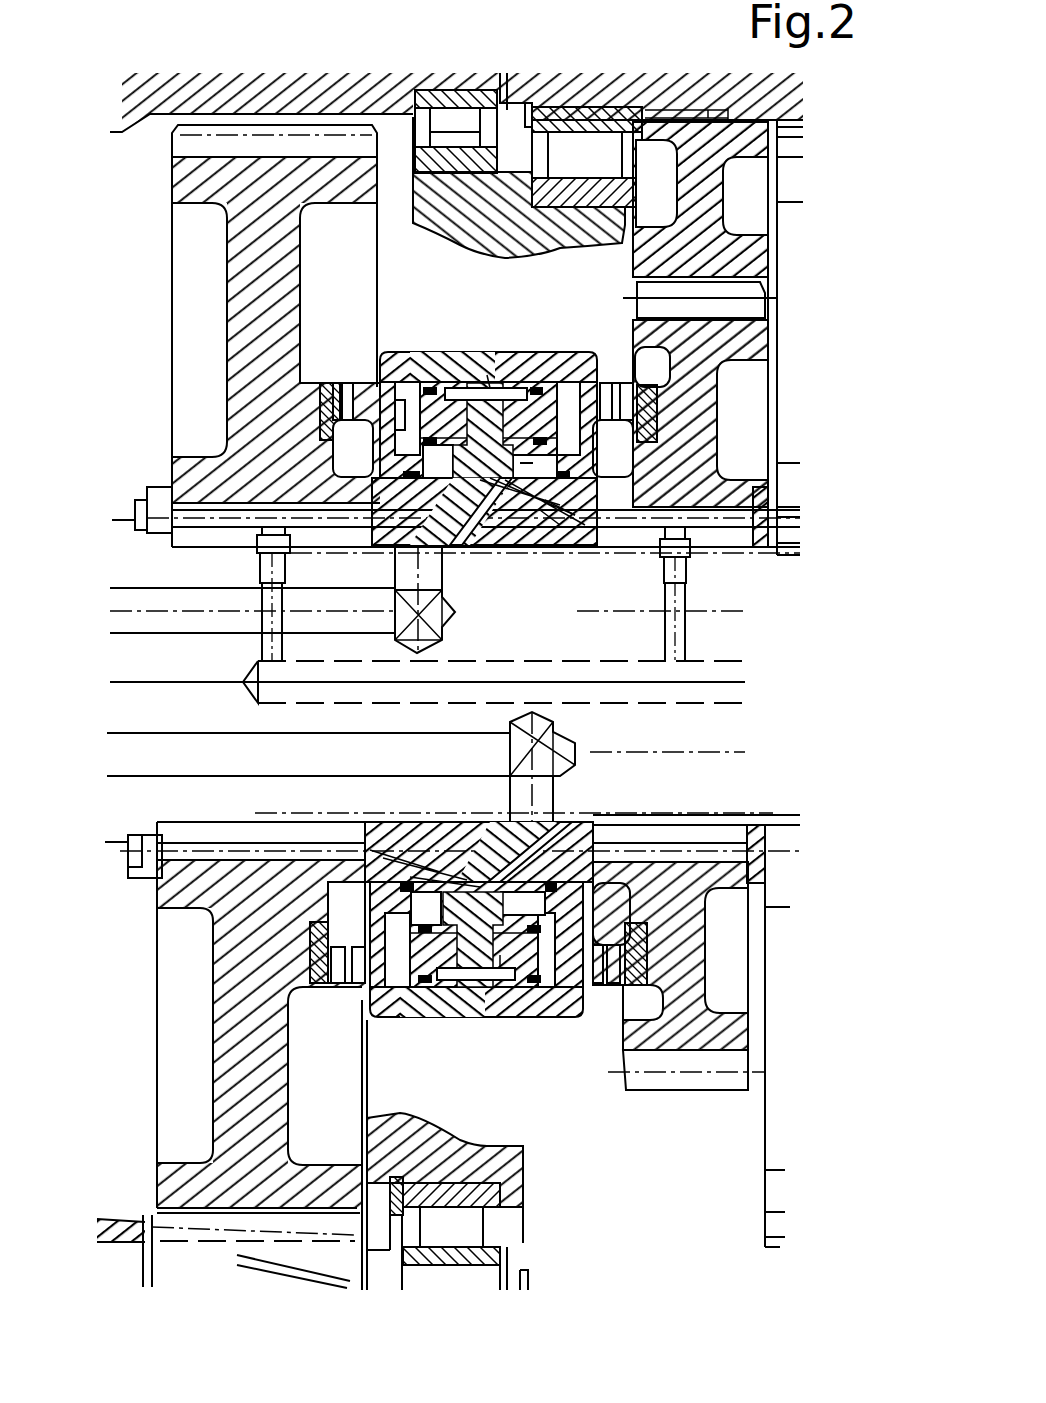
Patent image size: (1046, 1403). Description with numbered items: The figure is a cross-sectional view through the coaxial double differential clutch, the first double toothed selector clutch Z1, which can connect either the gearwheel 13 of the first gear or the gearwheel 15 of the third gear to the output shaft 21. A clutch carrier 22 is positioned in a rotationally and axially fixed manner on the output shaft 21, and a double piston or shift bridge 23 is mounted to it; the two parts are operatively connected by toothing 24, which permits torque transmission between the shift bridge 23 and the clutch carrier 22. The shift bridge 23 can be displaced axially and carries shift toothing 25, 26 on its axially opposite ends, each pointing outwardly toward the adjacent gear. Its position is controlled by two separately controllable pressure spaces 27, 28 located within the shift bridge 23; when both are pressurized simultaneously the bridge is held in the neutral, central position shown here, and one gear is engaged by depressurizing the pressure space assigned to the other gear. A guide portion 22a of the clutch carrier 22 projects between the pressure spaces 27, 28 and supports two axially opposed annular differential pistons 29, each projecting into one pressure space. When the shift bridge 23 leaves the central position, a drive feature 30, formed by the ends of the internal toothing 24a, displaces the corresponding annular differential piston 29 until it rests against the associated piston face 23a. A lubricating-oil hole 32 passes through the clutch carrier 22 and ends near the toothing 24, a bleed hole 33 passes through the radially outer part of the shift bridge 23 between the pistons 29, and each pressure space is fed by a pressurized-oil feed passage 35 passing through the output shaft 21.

The gearwheel 13 is at (738, 335).
The gearwheel 15 is at (195, 330).
The output shaft 21 is at (585, 645).
The clutch carrier 22 is at (508, 517).
The guide portion 22a is at (512, 990).
The double piston 23 is at (640, 298).
The piston face 23a is at (380, 383).
The toothing 24 is at (482, 1000).
The internal toothing 24a is at (447, 1000).
The shift toothing 25 is at (603, 1000).
The shift toothing 26 is at (347, 992).
The pressure space 27 is at (565, 430).
The pressure space 28 is at (410, 433).
The annular differential piston 29 is at (405, 1000).
The drive feature 30 is at (490, 385).
The lubricating-oil hole 32 is at (583, 503).
The bleed hole 33 is at (515, 352).
The pressurized-oil feed passage 35 is at (125, 757).
The first double toothed selector clutch Z1 is at (461, 340).